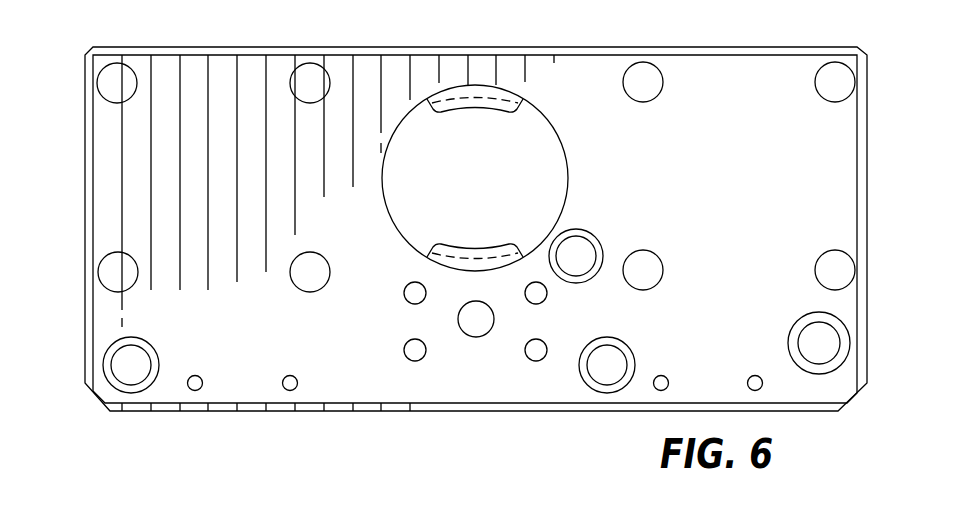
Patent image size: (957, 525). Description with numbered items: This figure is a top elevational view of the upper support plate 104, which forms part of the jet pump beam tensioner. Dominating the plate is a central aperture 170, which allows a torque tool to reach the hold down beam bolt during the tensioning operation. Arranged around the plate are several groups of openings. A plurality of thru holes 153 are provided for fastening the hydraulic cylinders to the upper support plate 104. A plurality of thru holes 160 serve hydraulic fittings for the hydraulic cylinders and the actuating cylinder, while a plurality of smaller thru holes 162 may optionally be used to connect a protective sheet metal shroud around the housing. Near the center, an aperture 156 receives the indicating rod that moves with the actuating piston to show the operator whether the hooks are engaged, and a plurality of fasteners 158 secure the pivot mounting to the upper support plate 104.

The upper support plate 104 is at (696, 68).
The central aperture 170 is at (567, 195).
The thru holes 153 is at (118, 253).
The thru holes 160 is at (124, 382).
The smaller thru holes 162 is at (203, 385).
The fasteners 158 is at (418, 353).
The aperture 156 is at (477, 327).